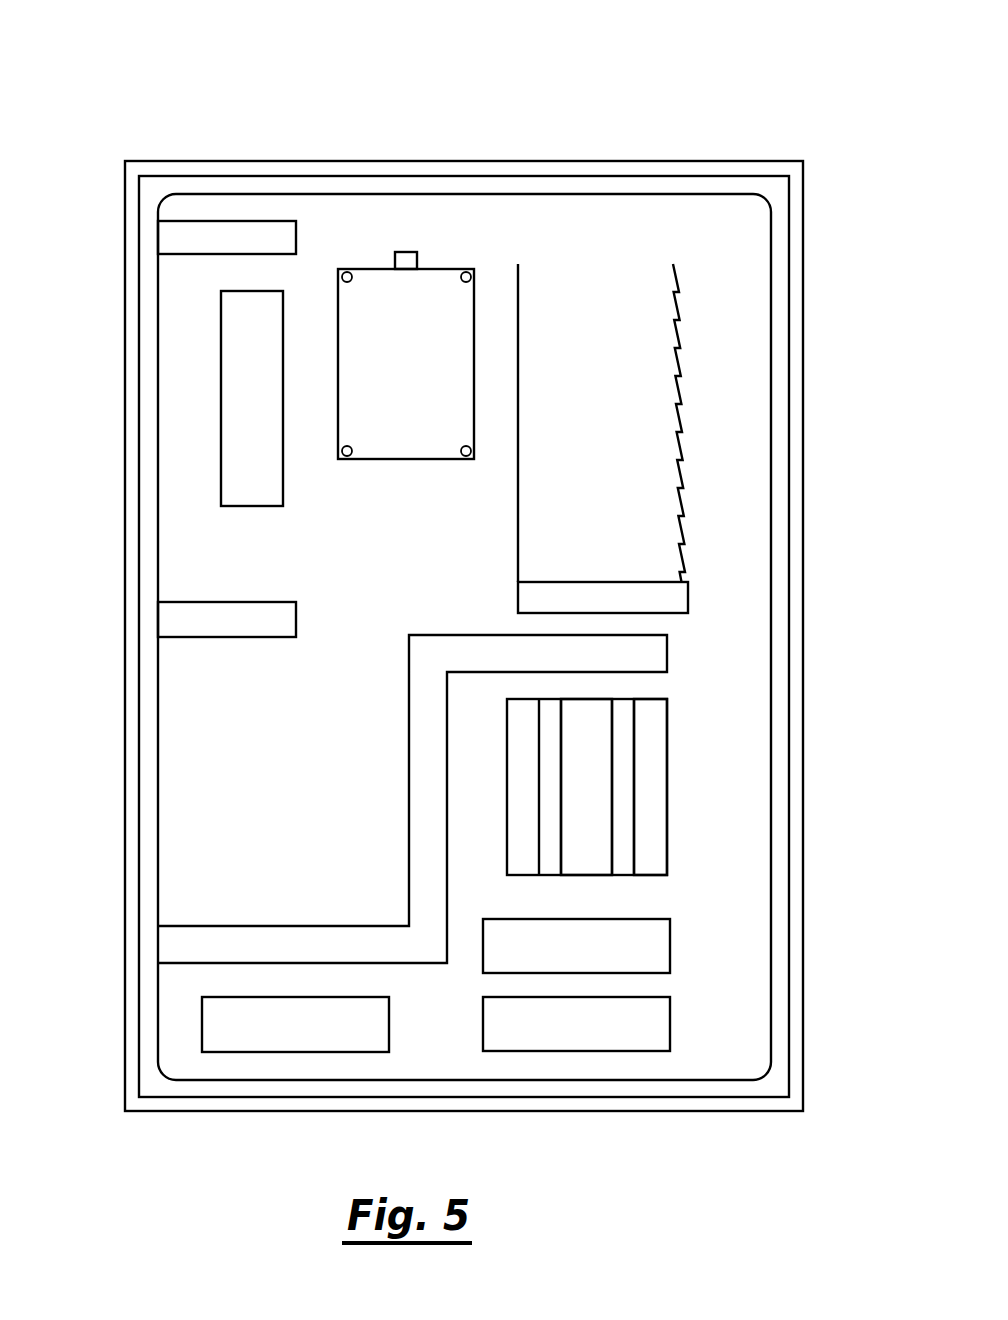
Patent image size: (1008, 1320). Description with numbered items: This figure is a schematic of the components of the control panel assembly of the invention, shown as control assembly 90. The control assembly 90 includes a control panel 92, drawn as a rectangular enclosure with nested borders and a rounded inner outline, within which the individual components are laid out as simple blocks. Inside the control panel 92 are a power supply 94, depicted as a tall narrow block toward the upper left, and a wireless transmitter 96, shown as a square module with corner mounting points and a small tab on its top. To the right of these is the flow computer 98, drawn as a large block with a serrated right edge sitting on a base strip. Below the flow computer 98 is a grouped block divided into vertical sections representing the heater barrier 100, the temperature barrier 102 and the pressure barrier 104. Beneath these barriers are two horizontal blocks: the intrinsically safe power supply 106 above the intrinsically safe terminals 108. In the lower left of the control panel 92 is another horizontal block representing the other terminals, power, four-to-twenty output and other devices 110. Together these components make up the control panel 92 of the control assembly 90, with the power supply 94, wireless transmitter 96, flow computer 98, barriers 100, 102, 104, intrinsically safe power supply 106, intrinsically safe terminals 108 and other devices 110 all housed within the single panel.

The control assembly 90 is at (280, 118).
The control panel 92 is at (798, 502).
The power supply 94 is at (244, 390).
The wireless transmitter 96 is at (420, 298).
The flow computer 98 is at (624, 388).
The heater barrier 100 is at (527, 764).
The temperature barrier 102 is at (595, 812).
The pressure barrier 104 is at (648, 846).
The intrinsically safe power supply 106 is at (658, 945).
The intrinsically safe terminals 108 is at (610, 1041).
The other terminals, power, 4-20 output and other devices 110 is at (228, 1038).